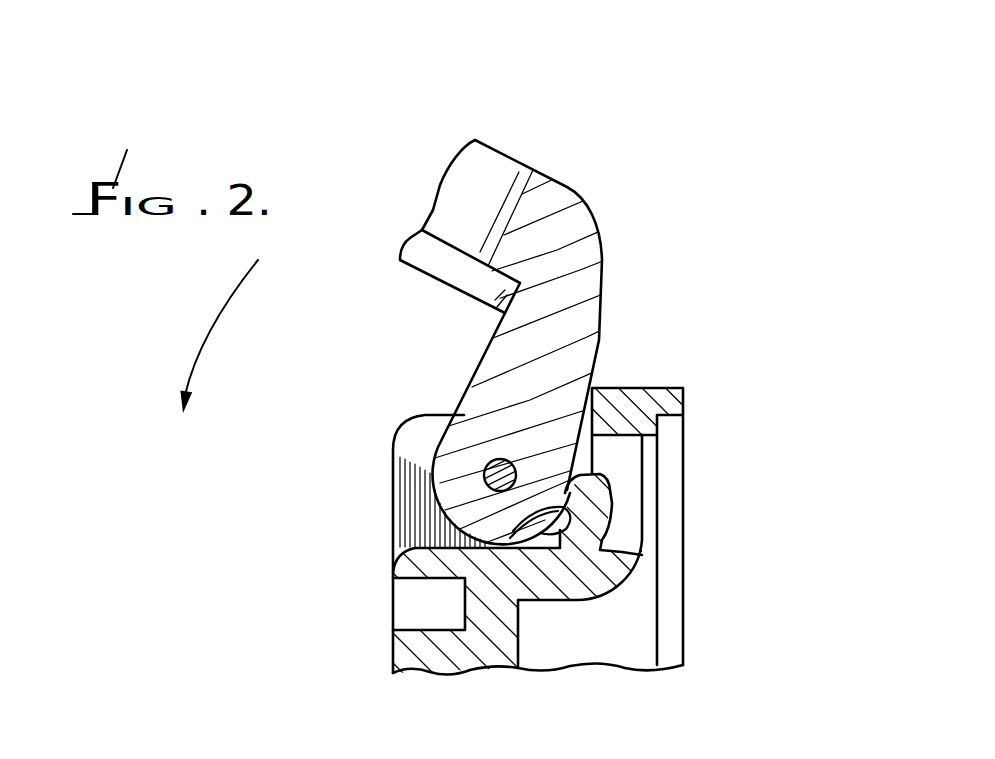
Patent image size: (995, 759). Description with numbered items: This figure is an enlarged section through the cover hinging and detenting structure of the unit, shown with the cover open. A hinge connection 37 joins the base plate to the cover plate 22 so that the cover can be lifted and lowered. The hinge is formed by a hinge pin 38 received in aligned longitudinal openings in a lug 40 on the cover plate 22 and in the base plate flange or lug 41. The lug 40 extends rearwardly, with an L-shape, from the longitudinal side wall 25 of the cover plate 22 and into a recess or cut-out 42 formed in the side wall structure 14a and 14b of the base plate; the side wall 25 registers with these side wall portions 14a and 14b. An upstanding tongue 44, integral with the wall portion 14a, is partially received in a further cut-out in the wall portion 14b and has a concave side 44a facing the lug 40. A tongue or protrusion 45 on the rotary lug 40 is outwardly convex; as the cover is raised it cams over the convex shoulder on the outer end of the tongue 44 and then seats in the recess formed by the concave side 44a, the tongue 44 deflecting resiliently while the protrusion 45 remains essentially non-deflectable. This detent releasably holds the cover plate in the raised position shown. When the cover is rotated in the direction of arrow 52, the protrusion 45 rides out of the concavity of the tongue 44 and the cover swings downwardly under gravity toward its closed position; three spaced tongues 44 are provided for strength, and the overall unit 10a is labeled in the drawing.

The cover plate 22 is at (596, 170).
The longitudinal side wall 25 is at (487, 160).
The lug 40 is at (581, 351).
The hinge pin 38 is at (490, 457).
The hinge connection 37 is at (452, 487).
The base plate flange or lug 41 is at (425, 447).
The recess or cut-out 42 is at (412, 525).
The concave side 44a is at (503, 545).
The tongue or protrusion 45 is at (573, 503).
The upstanding tongue 44 is at (597, 513).
The side wall portion 14a is at (575, 590).
The side wall portion 14b is at (647, 393).
The frame 10a is at (712, 441).
The arrow 52 is at (217, 313).